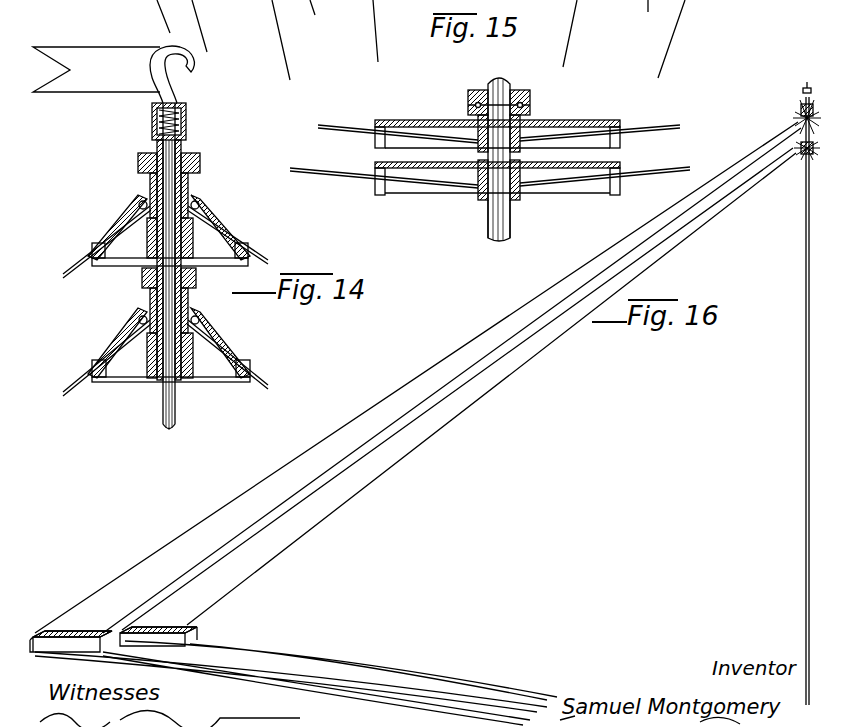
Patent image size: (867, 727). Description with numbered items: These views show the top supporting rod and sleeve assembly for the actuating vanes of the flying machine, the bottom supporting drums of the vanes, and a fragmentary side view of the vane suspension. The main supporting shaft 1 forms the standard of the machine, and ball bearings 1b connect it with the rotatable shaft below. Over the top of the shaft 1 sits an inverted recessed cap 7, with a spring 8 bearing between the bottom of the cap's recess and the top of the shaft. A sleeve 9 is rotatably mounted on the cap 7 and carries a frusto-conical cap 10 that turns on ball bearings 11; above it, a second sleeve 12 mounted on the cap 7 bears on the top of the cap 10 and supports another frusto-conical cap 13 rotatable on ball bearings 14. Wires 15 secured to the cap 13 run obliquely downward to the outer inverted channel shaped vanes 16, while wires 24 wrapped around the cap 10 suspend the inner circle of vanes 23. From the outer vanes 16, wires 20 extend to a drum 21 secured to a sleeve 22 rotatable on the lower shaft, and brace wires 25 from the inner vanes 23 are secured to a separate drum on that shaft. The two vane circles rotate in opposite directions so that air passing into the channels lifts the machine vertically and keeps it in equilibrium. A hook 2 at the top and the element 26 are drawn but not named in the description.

In FIG. 14, the main supporting shaft 1 is at (167, 408).
In FIG. 15, the main supporting shaft 1 is at (528, 115).
In FIG. 16, the main supporting shaft 1 is at (806, 356).
In FIG. 15, the ball bearings 1b is at (513, 88).
In FIG. 14, the hook 2 is at (190, 68).
In FIG. 14, the inverted recessed cap 7 is at (183, 150).
In FIG. 14, the spring 8 is at (152, 126).
In FIG. 14, the sleeve 9 is at (190, 347).
In FIG. 14, the frusto-conical cap 10 is at (200, 315).
In FIG. 16, the frusto-conical cap 10 is at (798, 153).
In FIG. 14, the ball bearings 11 is at (133, 331).
In FIG. 14, the sleeve 12 is at (143, 259).
In FIG. 14, the frusto-conical cap 13 is at (137, 203).
In FIG. 16, the frusto-conical cap 13 is at (804, 110).
In FIG. 14, the ball bearings 14 is at (206, 201).
In FIG. 14, the wires 15 is at (75, 258).
In FIG. 15, the wires 15 is at (670, 45).
In FIG. 16, the wires 15 is at (155, 555).
In FIG. 16, the inverted channel shaped vanes 16 is at (72, 636).
In FIG. 15, the wires 20 is at (323, 175).
In FIG. 16, the wires 20 is at (472, 712).
In FIG. 15, the drum 21 is at (380, 195).
In FIG. 15, the sleeve 22 is at (497, 215).
In FIG. 16, the vanes 23 is at (197, 628).
In FIG. 14, the wires 24 is at (78, 388).
In FIG. 15, the wires 24 is at (428, 1).
In FIG. 16, the wires 24 is at (320, 524).
In FIG. 15, the brace wires 25 is at (583, 130).
In FIG. 16, the brace wires 25 is at (382, 673).
In FIG. 15, the upper frame / wire 26 is at (423, 120).